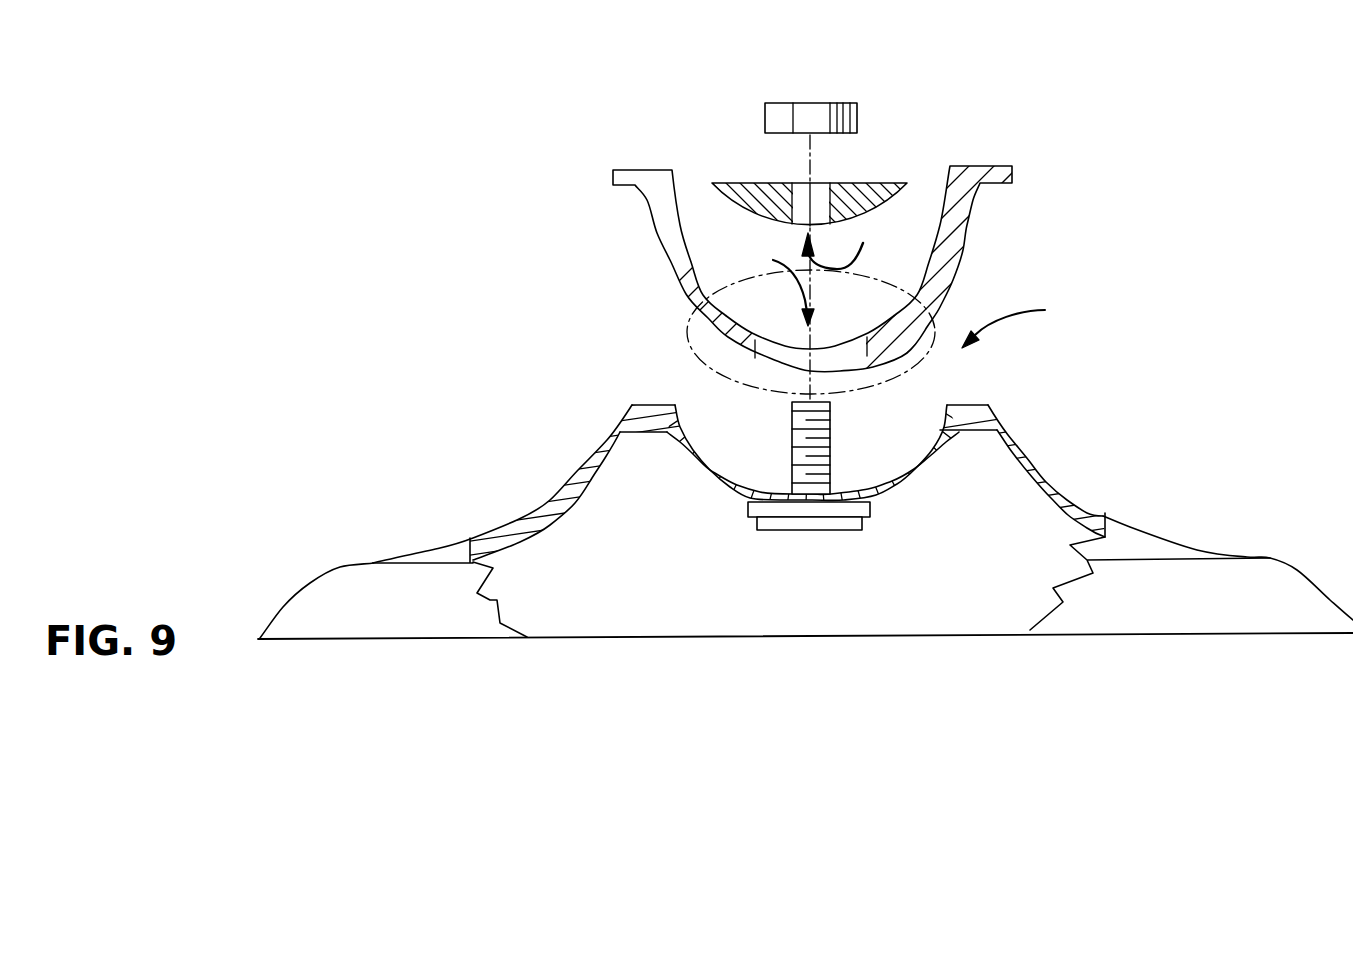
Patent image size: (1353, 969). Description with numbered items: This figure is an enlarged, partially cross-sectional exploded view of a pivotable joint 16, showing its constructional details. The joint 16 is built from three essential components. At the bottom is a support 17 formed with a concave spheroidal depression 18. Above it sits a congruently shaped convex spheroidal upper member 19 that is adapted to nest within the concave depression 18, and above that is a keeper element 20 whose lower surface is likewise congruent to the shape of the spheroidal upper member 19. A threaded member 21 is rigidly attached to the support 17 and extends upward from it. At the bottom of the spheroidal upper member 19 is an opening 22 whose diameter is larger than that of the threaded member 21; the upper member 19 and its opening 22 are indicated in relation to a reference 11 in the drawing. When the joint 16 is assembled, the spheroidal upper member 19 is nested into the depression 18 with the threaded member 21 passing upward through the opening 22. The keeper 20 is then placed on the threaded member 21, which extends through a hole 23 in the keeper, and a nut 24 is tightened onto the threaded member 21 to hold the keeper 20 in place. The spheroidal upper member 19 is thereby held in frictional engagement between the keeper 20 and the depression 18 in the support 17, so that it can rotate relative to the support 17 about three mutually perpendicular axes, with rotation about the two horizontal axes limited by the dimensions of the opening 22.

The ball 11 is at (684, 335).
The joint 16 is at (1023, 320).
The support 17 is at (1012, 443).
The concave spheroidal depression 18 is at (708, 461).
The spheroidal upper member 19 is at (980, 190).
The keeper element 20 is at (858, 182).
The threaded member 21 is at (831, 440).
The opening 22 is at (773, 282).
The hole 23 is at (854, 247).
The nut 24 is at (843, 102).